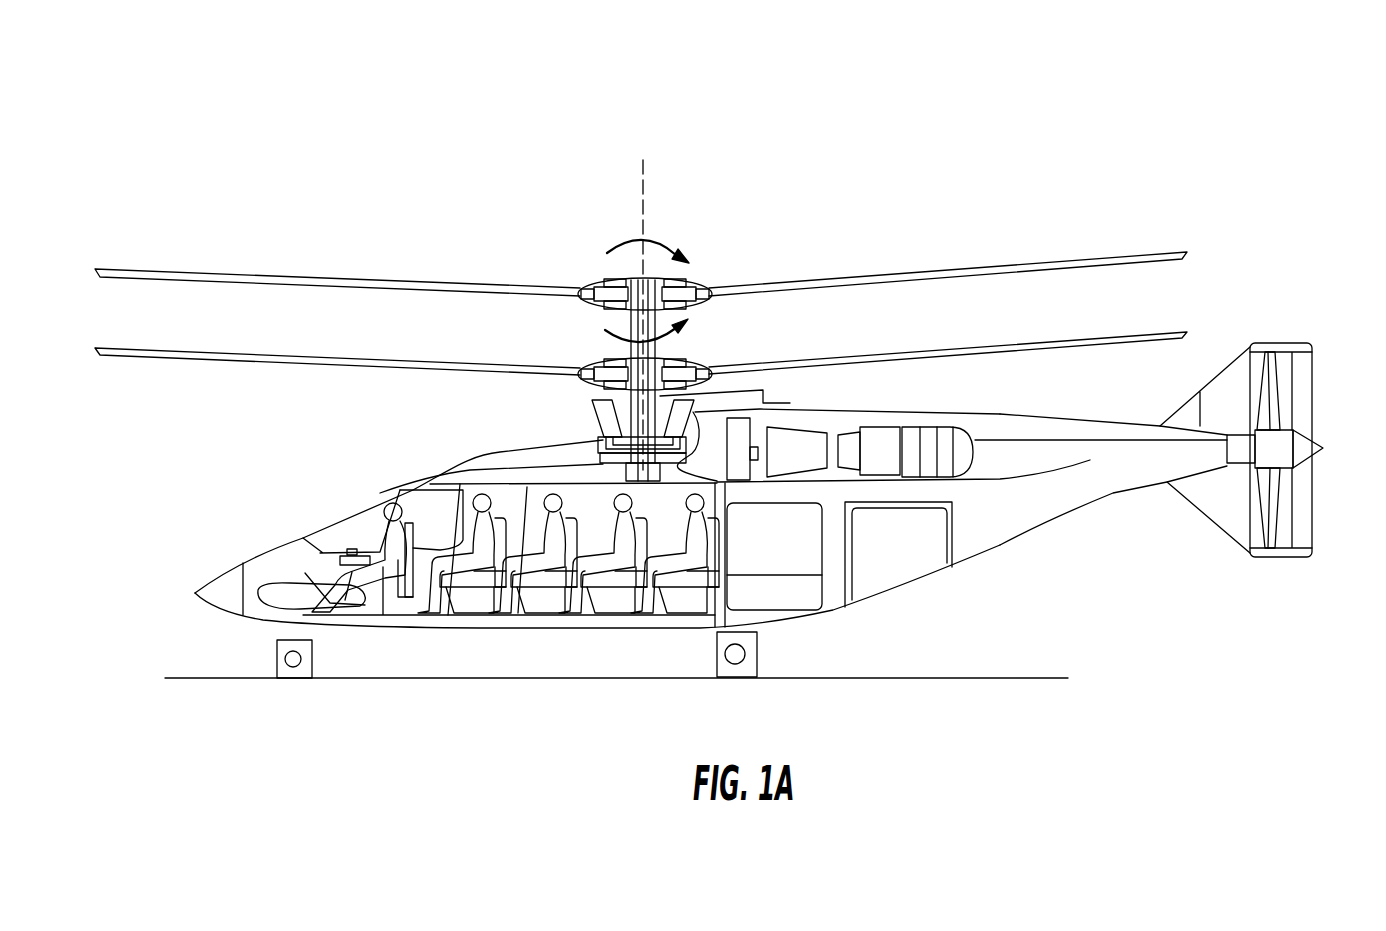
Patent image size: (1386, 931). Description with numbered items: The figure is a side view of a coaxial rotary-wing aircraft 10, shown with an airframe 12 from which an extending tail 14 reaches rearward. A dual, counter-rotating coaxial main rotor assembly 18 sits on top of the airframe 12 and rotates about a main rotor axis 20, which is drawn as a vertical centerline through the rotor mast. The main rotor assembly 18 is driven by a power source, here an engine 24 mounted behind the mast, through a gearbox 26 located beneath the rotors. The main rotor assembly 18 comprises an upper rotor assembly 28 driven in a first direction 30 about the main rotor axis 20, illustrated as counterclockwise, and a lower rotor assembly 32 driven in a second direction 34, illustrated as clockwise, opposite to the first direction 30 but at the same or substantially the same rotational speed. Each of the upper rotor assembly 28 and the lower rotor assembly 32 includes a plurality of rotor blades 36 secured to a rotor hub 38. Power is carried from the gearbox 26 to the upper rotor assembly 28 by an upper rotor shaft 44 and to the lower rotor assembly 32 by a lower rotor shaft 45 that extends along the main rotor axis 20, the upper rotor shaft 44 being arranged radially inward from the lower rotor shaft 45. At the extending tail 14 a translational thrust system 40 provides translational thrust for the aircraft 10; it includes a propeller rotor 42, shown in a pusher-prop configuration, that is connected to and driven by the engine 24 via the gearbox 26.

The rotary-wing aircraft 10 is at (732, 412).
The airframe 12 is at (597, 586).
The extending tail 14 is at (1173, 418).
The main rotor assembly 18 is at (641, 305).
The main rotor axis 20 is at (680, 300).
The engine 24 is at (850, 424).
The gearbox 26 is at (596, 435).
The upper rotor assembly 28 is at (948, 261).
The first direction 30 is at (611, 341).
The lower rotor assembly 32 is at (948, 338).
The second direction 34 is at (662, 229).
The rotor blades 36 is at (337, 322).
The rotor hub 38 is at (677, 315).
The translational thrust system 40 is at (1281, 410).
The propeller rotor 42 is at (1299, 416).
The upper rotor shaft 44 is at (572, 380).
The lower rotor shaft 45 is at (875, 425).